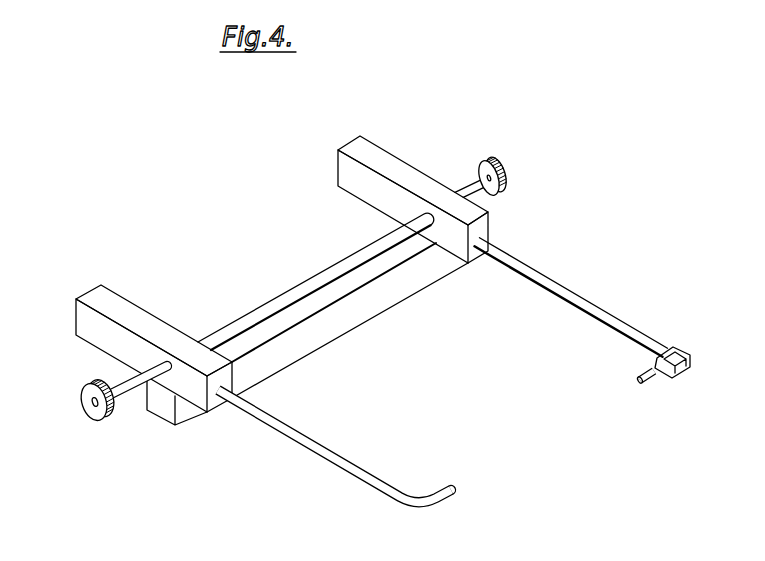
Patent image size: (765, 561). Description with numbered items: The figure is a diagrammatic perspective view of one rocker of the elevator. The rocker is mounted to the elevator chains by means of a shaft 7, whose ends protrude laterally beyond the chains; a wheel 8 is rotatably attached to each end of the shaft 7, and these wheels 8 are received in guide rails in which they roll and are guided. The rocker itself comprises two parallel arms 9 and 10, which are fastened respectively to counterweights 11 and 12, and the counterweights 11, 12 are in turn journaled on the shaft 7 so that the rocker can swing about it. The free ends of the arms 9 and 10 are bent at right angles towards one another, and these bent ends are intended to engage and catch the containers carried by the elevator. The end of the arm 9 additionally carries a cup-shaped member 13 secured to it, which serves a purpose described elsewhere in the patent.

The shaft 7 is at (315, 278).
The wheel 8 is at (509, 178).
The arm 9 is at (552, 285).
The arm 10 is at (342, 464).
The counterweight 11 is at (383, 163).
The counterweight 12 is at (125, 311).
The socket fitting 13 is at (677, 372).